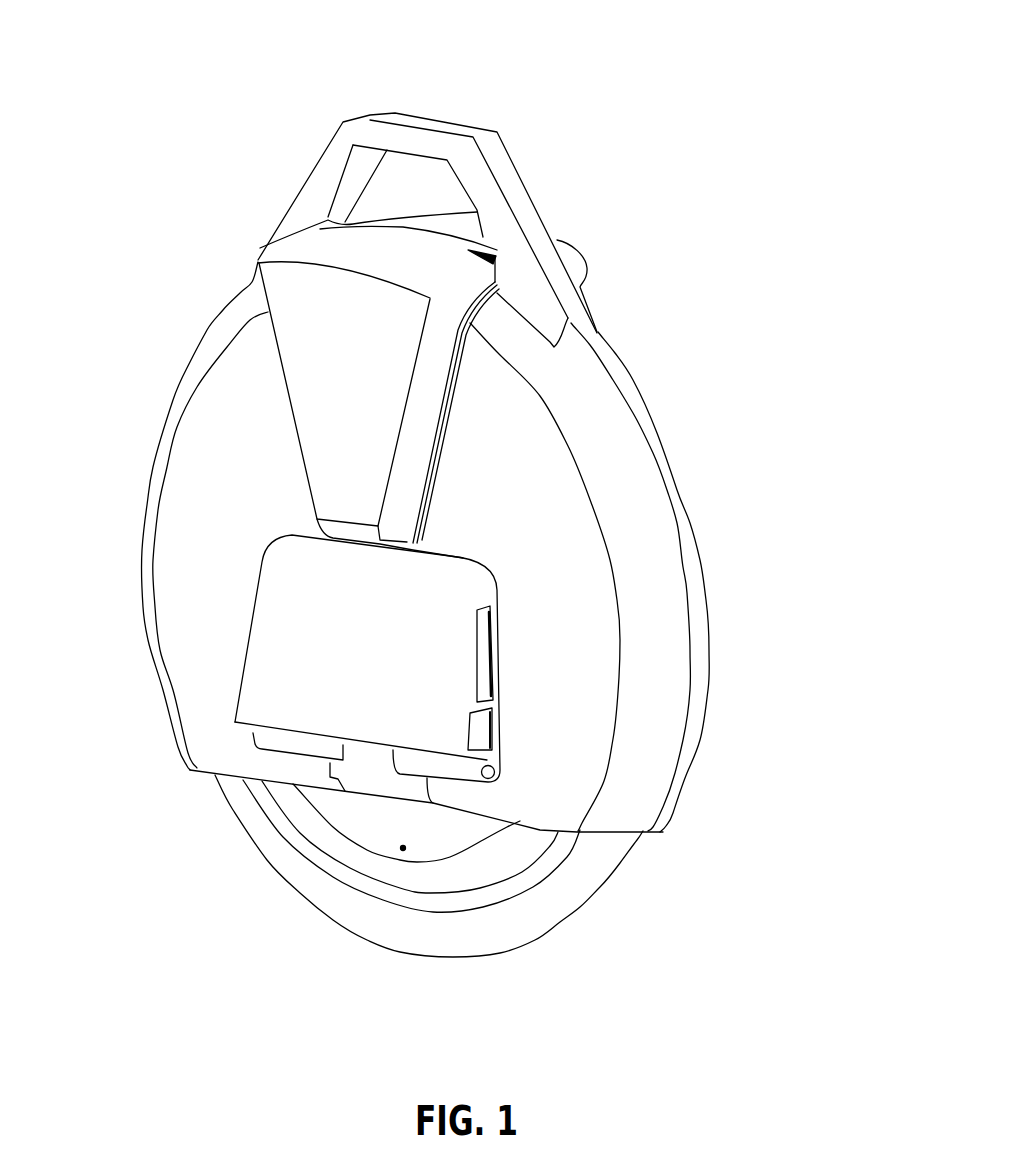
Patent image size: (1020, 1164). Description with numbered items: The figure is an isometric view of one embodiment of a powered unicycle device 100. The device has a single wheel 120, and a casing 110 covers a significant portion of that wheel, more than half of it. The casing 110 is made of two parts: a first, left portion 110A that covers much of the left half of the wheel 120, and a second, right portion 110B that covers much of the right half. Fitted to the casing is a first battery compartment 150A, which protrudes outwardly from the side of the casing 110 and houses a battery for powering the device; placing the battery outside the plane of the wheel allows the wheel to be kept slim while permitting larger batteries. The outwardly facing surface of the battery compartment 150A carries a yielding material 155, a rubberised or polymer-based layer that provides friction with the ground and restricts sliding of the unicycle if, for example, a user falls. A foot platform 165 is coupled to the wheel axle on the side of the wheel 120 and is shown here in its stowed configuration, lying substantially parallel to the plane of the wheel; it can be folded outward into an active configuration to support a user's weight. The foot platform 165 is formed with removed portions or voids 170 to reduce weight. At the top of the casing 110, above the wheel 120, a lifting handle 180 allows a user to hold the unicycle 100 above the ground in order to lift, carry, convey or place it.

The powered unicycle device 100 is at (742, 106).
The casing 110 is at (662, 563).
The first, left portion of the casing 110A is at (650, 700).
The second, right portion of the casing 110B is at (665, 407).
The wheel 120 is at (327, 848).
The first battery compartment 150A is at (367, 332).
The yielding material 155 is at (367, 383).
The foot platform 165 is at (272, 650).
The removed portions (voids) 170 is at (487, 686).
The lifting handle 180 is at (498, 132).